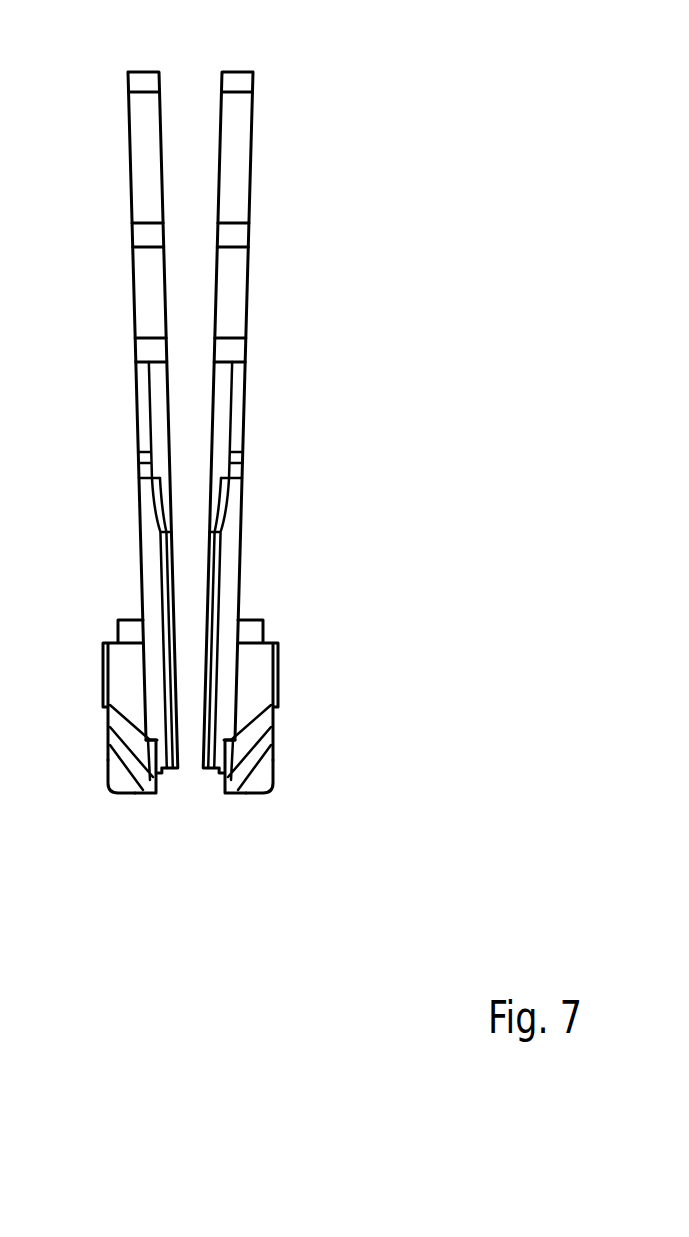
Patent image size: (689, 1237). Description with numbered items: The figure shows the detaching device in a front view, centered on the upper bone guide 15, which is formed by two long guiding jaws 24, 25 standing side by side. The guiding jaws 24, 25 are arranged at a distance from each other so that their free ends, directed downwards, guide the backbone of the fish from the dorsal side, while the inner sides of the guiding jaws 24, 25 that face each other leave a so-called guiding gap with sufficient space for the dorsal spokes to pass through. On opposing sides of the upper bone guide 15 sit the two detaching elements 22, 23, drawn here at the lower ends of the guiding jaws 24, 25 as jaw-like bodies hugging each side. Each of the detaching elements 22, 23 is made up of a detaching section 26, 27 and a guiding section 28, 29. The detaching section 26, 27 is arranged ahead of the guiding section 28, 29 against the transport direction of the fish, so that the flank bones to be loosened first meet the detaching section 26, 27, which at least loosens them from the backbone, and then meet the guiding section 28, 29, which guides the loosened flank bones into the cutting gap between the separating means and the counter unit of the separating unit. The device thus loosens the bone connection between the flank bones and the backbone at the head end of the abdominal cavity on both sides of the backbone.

The upper bone guide 15 is at (300, 73).
The detaching element 22 is at (88, 633).
The detaching element 23 is at (295, 633).
The guiding jaw 24 is at (141, 147).
The guiding jaw 25 is at (235, 155).
The detaching section 26 is at (157, 812).
The detaching section 27 is at (231, 812).
The guiding section 28 is at (106, 807).
The guiding section 29 is at (279, 807).